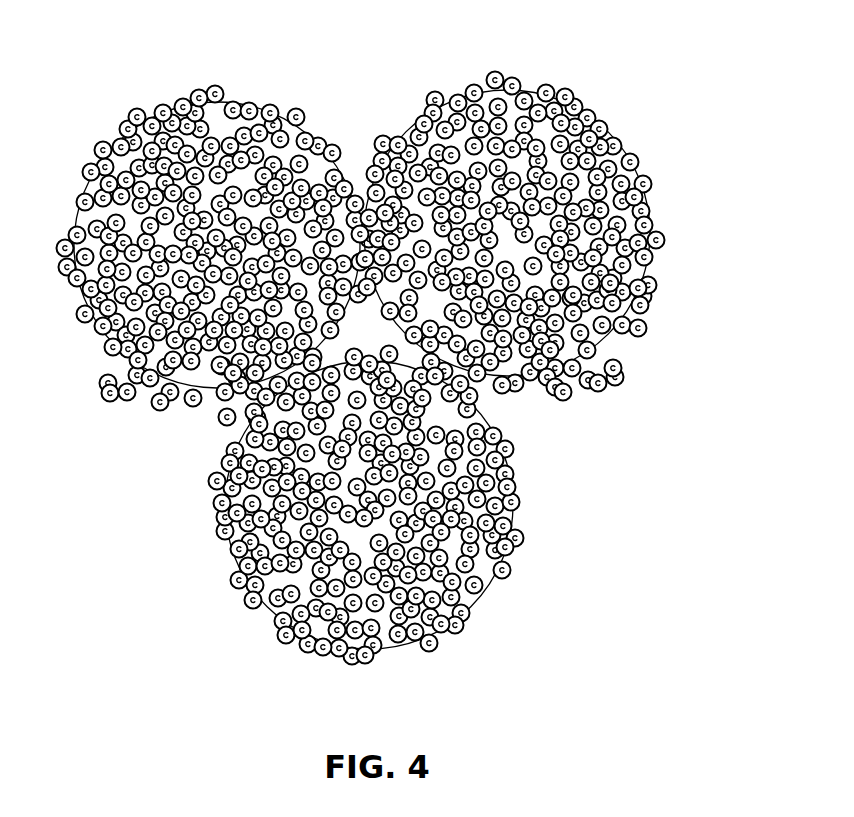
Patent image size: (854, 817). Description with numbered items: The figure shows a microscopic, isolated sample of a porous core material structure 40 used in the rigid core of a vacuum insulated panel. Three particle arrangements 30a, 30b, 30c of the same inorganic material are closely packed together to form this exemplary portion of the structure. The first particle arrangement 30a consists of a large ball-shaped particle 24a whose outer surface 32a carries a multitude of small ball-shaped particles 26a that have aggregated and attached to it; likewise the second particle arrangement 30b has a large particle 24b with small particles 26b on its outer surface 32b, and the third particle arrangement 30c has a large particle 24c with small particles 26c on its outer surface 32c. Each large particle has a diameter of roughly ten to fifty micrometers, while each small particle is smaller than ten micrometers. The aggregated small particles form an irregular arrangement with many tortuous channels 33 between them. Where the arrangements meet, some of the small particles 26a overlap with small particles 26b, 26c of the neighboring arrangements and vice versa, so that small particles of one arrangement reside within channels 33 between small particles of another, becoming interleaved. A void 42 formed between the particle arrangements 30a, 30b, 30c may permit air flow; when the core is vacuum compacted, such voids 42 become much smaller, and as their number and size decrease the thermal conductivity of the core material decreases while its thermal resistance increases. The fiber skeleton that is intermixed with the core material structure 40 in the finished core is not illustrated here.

The porous core material structure 40 is at (699, 73).
The first particle arrangement 30a is at (108, 69).
The second particle arrangement 30b is at (570, 76).
The third particle arrangement 30c is at (175, 552).
The large particle 24a is at (185, 101).
The large particle 24b is at (651, 224).
The large particle 24c is at (505, 495).
The small particles 26a is at (61, 205).
The small particles 26b is at (646, 140).
The small particles 26c is at (522, 545).
The outer surface 32a is at (210, 110).
The outer surface 32b is at (437, 117).
The outer surface 32c is at (350, 639).
The tortuous channels 33 is at (300, 180).
The void 42 is at (358, 180).